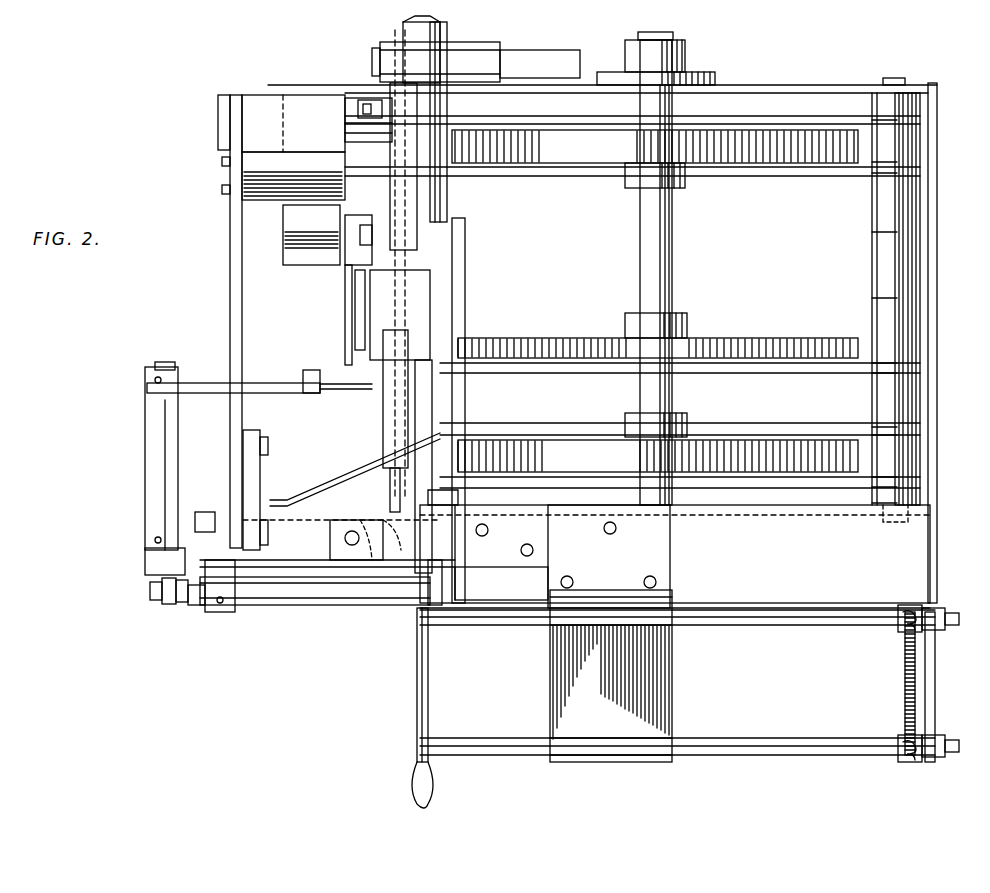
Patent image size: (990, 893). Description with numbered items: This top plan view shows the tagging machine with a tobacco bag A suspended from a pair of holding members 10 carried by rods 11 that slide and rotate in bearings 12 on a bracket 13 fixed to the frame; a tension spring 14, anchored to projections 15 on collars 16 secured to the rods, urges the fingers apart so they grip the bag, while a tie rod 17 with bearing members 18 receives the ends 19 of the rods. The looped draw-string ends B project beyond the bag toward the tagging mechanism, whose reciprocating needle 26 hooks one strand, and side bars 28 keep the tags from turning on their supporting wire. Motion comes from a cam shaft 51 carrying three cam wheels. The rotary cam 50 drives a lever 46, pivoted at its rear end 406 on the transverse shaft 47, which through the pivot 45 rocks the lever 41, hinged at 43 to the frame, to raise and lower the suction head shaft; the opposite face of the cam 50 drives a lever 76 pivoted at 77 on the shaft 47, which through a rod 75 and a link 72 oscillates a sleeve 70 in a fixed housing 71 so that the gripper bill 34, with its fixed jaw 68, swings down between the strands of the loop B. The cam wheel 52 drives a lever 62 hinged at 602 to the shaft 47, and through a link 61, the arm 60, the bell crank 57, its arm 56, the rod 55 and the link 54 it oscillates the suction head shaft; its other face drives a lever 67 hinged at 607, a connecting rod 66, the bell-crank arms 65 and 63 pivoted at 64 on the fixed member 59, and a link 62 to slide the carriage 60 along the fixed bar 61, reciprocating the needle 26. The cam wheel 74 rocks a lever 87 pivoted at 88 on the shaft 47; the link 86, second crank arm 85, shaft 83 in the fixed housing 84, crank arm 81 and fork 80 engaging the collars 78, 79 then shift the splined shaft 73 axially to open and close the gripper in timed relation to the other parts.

The bag holding members 10 is at (418, 630).
The rods 11 is at (478, 737).
The bearings 12 is at (598, 741).
The bracket 13 is at (609, 556).
The tension spring 14 is at (905, 680).
The projections 15 is at (911, 605).
The collars 16 is at (898, 627).
The tie rod 17 is at (935, 678).
The bearing members 18 is at (940, 610).
The rod ends 19 is at (948, 625).
The reciprocating needle 26 is at (432, 388).
The side bars 28 is at (460, 264).
The gripper bill 34 is at (440, 590).
The lever 41 is at (432, 404).
The hinged end of lever 43 is at (440, 45).
The pivot 45 is at (455, 500).
The lever 46 is at (764, 502).
The transverse shaft 47 is at (894, 83).
The rotary cam 50 is at (658, 456).
The cam shaft 51 is at (665, 236).
The cam wheel 52 is at (632, 153).
The link 54 is at (402, 608).
The rod 55 is at (355, 478).
The bell crank arm 56 is at (345, 324).
The bell crank 57 is at (345, 262).
The fixed member 59 is at (283, 216).
The carriage 60 is at (410, 305).
The fixed bar 61 is at (398, 222).
The link 62 is at (728, 172).
The bell crank arm 63 is at (338, 236).
The bell crank pivot 64 is at (305, 245).
The bell crank arm 65 is at (345, 135).
The connecting rod 66 is at (362, 96).
The lever 67 is at (740, 118).
The fixed gripper jaw 68 is at (445, 545).
The sleeve 70 is at (212, 612).
The fixed housing 71 is at (290, 605).
The link 72 is at (200, 602).
The splined shaft 73 is at (162, 597).
The cam wheel 74 is at (575, 347).
The rod 75 is at (200, 522).
The lever 76 is at (714, 430).
The rear end of lever 77 is at (905, 407).
The collar 78 is at (170, 607).
The collar 79 is at (185, 607).
The fork 80 is at (163, 585).
The crank arm 81 is at (150, 558).
The shaft 83 is at (164, 362).
The fixed housing 84 is at (150, 457).
The second crank arm 85 is at (258, 382).
The link 86 is at (340, 386).
The lever 87 is at (582, 370).
The rear end of lever 88 is at (905, 340).
The rear end of lever 406 is at (905, 462).
The rear end of lever 602 is at (905, 207).
The rear end of lever 607 is at (905, 137).
The bag A is at (416, 690).
The looped ends of draw strings B is at (436, 614).